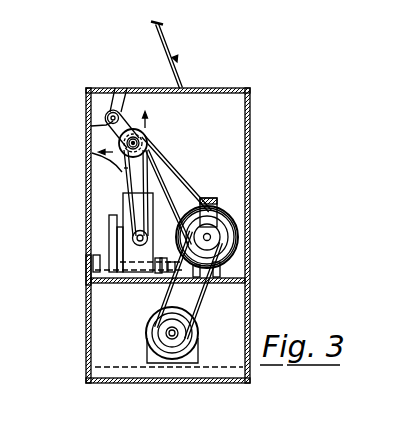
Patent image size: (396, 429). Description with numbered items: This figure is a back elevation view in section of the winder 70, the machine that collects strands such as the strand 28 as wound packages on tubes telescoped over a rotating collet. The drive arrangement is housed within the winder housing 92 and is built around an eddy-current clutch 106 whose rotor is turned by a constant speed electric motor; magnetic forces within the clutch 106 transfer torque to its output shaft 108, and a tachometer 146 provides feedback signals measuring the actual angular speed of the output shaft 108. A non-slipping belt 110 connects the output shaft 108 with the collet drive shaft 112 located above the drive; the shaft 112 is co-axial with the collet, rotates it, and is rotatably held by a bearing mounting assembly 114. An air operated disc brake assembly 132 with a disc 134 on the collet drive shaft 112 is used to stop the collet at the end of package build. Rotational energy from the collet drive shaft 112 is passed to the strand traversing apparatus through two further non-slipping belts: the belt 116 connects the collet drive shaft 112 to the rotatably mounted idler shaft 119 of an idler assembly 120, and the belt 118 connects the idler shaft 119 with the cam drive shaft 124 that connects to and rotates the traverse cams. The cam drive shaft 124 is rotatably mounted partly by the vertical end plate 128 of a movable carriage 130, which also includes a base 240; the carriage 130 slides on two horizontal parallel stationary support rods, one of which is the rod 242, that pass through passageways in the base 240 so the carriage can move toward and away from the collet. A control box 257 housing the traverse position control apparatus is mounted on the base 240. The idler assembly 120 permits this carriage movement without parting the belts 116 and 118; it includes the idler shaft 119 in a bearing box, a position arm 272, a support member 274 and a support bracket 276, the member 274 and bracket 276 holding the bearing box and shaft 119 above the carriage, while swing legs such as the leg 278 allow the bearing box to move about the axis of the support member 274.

The strand 28 is at (155, 31).
The winder 70 is at (248, 85).
The winder housing 92 is at (90, 276).
The eddy-current clutch 106 is at (193, 322).
The output shaft 108 is at (182, 334).
The non-slipping belt 110 is at (228, 290).
The collet drive shaft 112 is at (240, 219).
The bearing mounting assembly 114 is at (234, 207).
The non-slipping belt 116 is at (166, 158).
The non-slipping belt 118 is at (92, 153).
The idler shaft 119 is at (146, 143).
The idler assembly 120 is at (138, 109).
The cam drive shaft 124 is at (133, 237).
The vertical end plate 128 is at (130, 228).
The movable carriage 130 is at (163, 209).
The disc brake assembly 132 is at (220, 190).
The disc 134 is at (212, 237).
The tachometer 146 is at (162, 330).
The base 240 is at (118, 273).
The support rod 242 is at (97, 255).
The control box 257 is at (114, 214).
The position arm 272 is at (133, 173).
The support member 274 is at (116, 92).
The support bracket 276 is at (100, 108).
The swing leg 278 is at (126, 92).